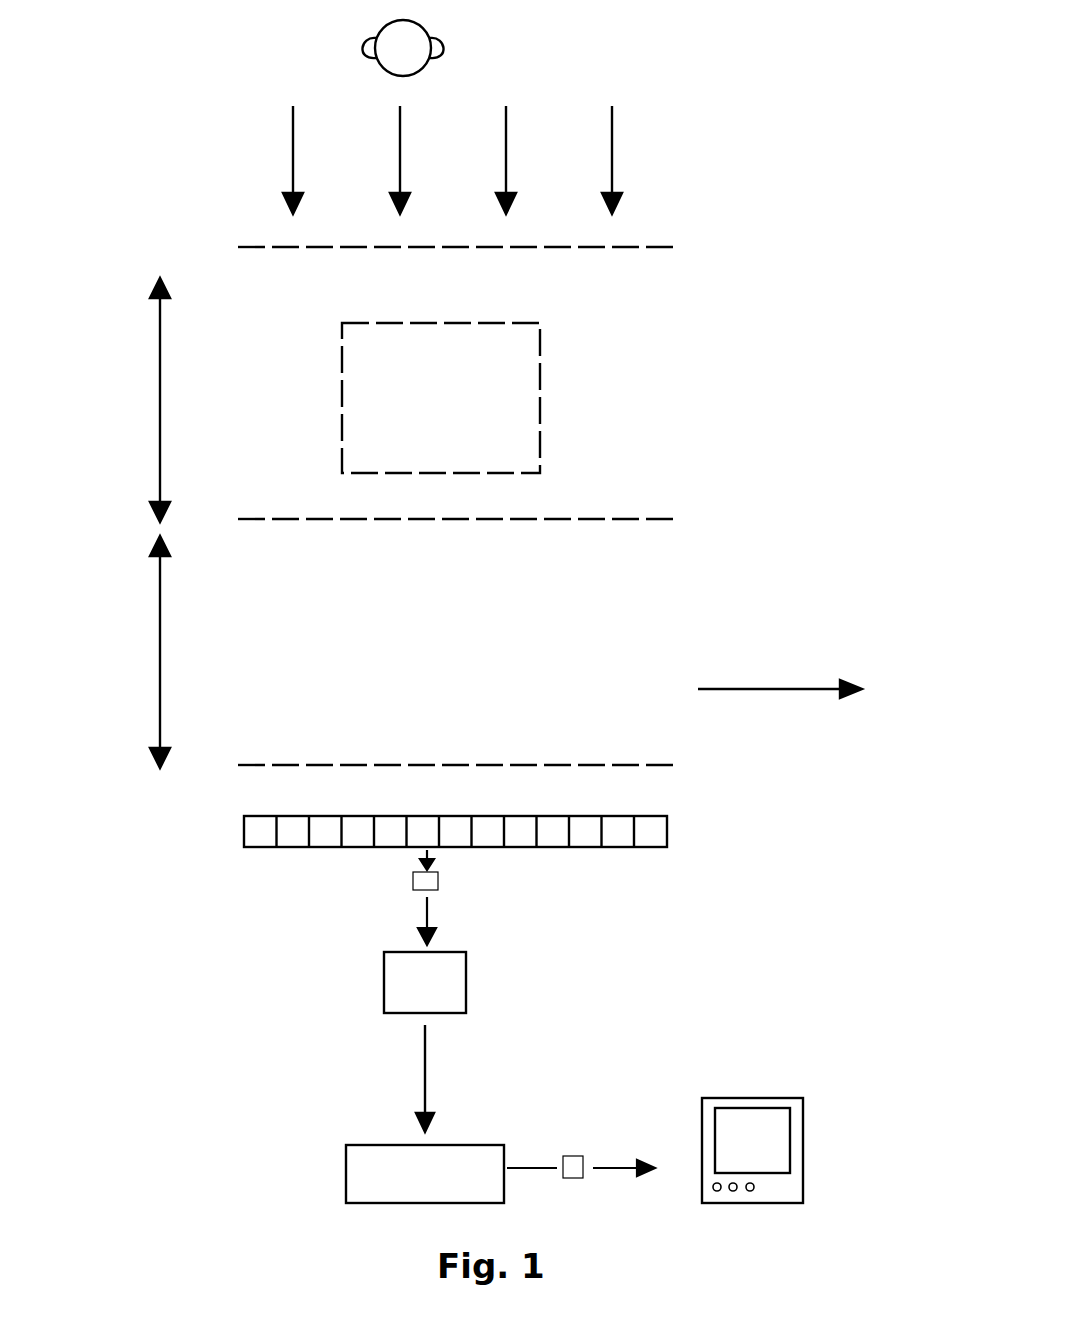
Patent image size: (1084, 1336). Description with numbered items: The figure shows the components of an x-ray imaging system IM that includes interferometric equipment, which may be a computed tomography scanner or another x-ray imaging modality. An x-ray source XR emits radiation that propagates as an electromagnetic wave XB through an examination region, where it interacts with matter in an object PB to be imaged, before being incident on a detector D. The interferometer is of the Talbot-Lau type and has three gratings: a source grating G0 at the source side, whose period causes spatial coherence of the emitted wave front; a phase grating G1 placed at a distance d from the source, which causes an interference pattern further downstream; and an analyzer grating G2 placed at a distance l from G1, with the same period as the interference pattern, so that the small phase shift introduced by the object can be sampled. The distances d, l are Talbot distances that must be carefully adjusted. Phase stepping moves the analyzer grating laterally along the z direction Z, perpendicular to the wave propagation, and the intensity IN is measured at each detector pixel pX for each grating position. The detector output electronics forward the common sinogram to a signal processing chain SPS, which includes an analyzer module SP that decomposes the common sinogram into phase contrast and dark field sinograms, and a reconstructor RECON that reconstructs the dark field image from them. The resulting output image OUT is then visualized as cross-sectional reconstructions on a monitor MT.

The x-ray source XR is at (433, 28).
The x-ray beam wave XB is at (590, 148).
The x-ray imaging system IM is at (765, 68).
The source grating G0 is at (479, 251).
The phase grating G1 is at (479, 523).
The analyzer grating G2 is at (479, 769).
The object PB is at (516, 388).
The distance from the x-ray source to the phase grating d is at (146, 400).
The distance between the phase grating and the analyzer grating l is at (145, 652).
The z direction Z is at (780, 673).
The detector D is at (651, 832).
The pixel pX is at (418, 838).
The intensity IN is at (432, 878).
The analyzer module SP is at (405, 995).
The signal processing chain SPS is at (530, 1050).
The reconstructor RECON is at (355, 1177).
The output image OUT is at (568, 1143).
The monitor MT is at (770, 1128).